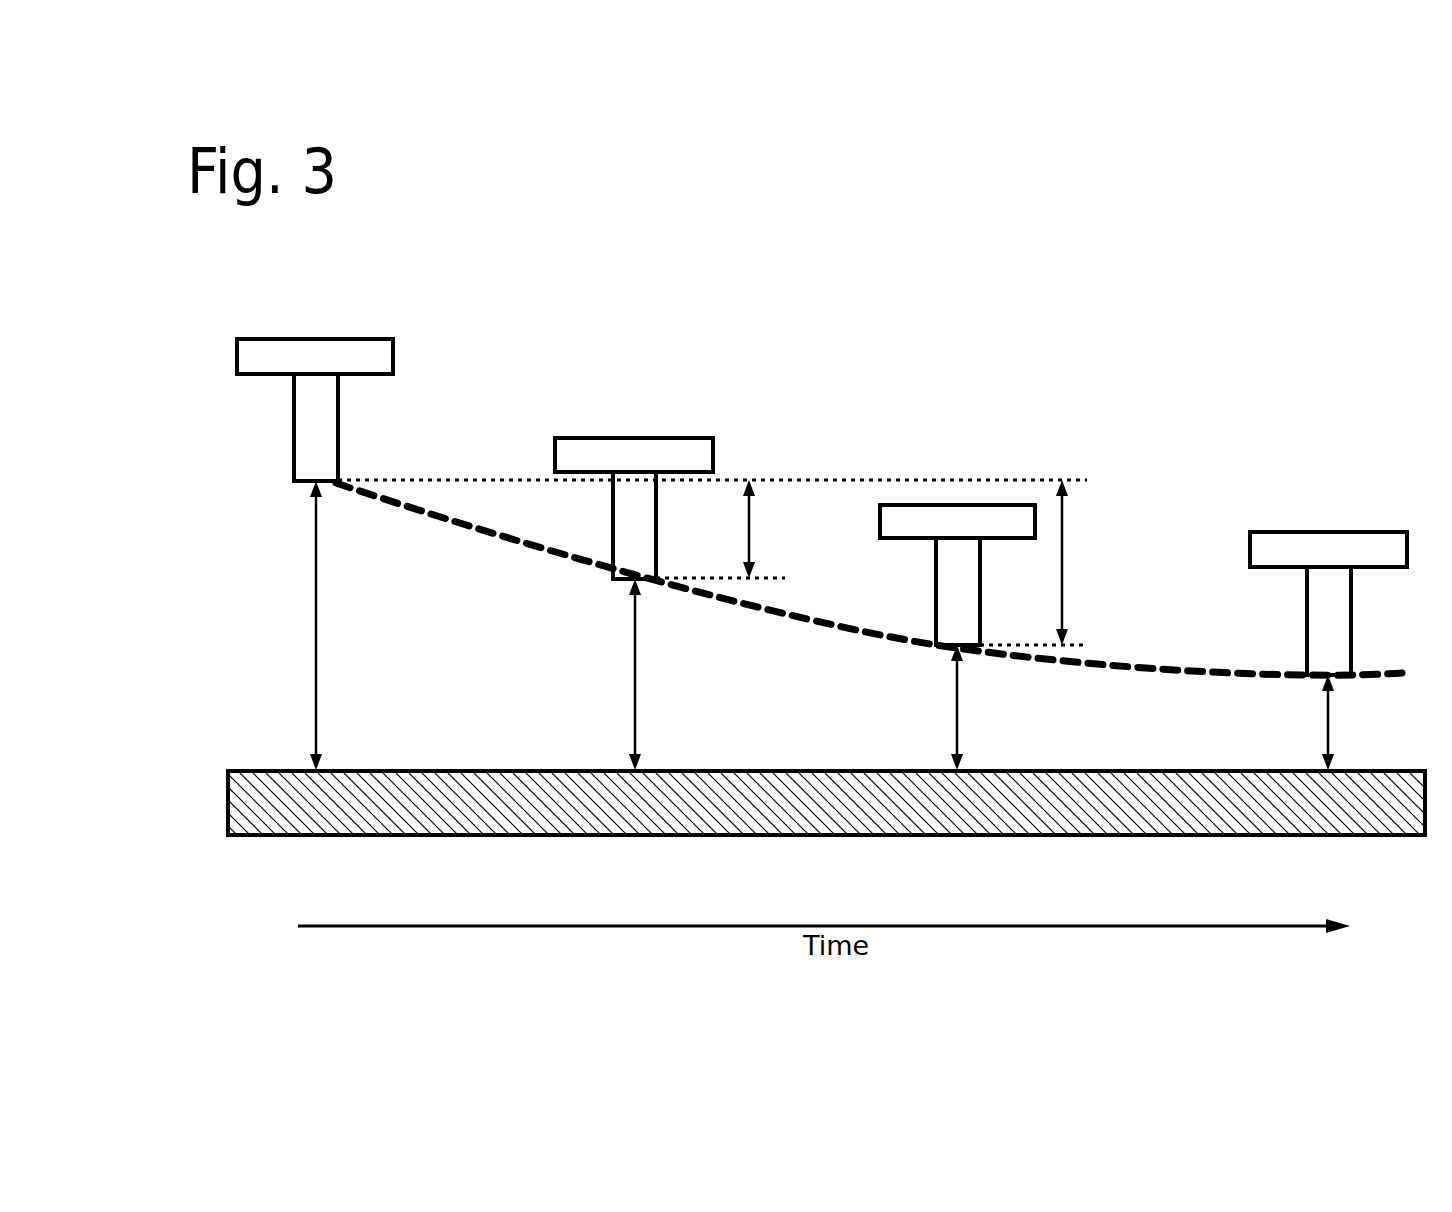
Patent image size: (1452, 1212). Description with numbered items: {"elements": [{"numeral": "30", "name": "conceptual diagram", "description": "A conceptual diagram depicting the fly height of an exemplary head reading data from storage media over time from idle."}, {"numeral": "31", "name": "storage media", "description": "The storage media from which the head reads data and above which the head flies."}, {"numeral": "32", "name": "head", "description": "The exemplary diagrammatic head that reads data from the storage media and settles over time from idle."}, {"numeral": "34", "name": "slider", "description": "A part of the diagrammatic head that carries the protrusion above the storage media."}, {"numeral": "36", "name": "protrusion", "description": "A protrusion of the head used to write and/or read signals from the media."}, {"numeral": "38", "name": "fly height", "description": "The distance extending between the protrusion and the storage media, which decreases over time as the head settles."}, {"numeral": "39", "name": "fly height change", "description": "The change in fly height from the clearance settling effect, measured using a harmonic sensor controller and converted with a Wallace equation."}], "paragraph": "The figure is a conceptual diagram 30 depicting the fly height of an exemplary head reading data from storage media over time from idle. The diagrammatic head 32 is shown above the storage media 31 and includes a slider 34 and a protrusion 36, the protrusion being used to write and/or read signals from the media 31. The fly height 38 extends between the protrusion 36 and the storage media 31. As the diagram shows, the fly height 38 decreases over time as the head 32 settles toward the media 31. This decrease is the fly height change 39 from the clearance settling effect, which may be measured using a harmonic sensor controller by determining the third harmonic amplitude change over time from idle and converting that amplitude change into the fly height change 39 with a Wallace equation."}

The printing system 30 is at (212, 316).
The substrate 31 is at (228, 800).
The print head 32 is at (548, 423).
The print head body 34 is at (328, 338).
The nozzle stem 36 is at (294, 438).
The stand-off height 38 is at (635, 646).
The height increment 39 is at (753, 517).